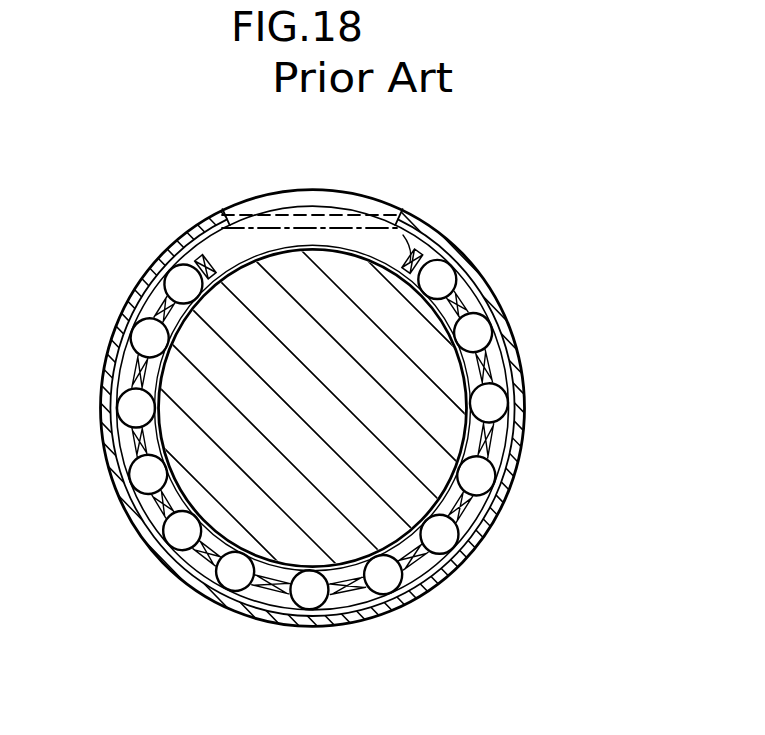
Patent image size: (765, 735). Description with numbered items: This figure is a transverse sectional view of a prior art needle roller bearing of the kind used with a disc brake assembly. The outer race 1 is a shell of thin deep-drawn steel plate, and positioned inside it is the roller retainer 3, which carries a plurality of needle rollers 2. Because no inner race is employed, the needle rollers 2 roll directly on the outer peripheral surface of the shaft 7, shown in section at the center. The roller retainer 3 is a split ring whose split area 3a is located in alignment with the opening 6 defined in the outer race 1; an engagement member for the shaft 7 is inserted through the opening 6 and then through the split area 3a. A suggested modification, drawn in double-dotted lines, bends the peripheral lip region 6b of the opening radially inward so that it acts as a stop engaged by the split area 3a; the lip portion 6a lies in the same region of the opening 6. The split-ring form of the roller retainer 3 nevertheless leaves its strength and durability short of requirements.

The outer race 1 is at (473, 267).
The needle rollers 2 is at (480, 333).
The roller retainer 3 is at (493, 377).
The split area 3a is at (409, 230).
The opening 6 is at (231, 212).
The seal plate portion 6a is at (297, 213).
The peripheral lip region 6b is at (357, 212).
The shaft 7 is at (455, 435).